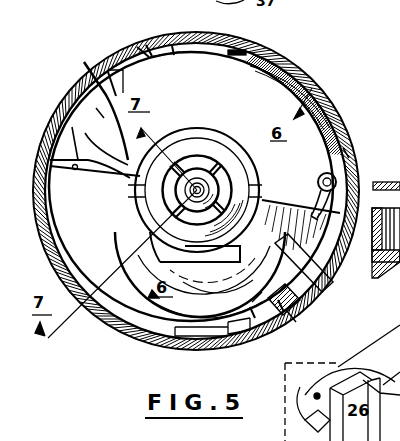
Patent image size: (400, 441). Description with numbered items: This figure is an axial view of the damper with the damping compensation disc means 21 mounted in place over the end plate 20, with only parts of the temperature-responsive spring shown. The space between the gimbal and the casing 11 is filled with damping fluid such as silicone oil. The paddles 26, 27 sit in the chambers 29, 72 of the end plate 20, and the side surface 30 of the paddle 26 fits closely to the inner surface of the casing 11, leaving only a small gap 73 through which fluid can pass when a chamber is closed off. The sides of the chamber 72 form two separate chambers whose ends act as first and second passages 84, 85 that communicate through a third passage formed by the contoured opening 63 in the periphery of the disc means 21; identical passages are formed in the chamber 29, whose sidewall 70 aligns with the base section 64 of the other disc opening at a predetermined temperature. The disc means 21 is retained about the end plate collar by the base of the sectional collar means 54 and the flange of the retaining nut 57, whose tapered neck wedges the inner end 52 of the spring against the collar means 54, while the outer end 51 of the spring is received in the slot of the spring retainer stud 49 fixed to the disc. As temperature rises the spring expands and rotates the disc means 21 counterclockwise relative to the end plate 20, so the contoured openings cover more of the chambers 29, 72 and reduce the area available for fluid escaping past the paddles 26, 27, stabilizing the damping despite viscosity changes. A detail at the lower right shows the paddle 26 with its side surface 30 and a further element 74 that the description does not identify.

The casing 11 is at (299, 73).
The end plate 20 is at (134, 62).
The damping compensation disc means 21 is at (128, 241).
The paddle 26 is at (111, 70).
The paddle 27 is at (310, 298).
The chamber 29 is at (76, 122).
The side surface 30 is at (347, 378).
The spring retainer stud 49 is at (336, 182).
The end of spring 51 is at (346, 152).
The inner end of spring 52 is at (163, 260).
The sectional collar means 54 is at (232, 144).
The retaining nut 57 is at (211, 170).
The contoured opening 63 is at (258, 219).
The base section of passage 64 is at (77, 170).
The sidewall of chamber 70 is at (88, 118).
The chamber 72 is at (326, 276).
The gap 73 is at (104, 94).
The cam 74 is at (299, 393).
The first passage 84 is at (293, 318).
The second passage 85 is at (303, 262).